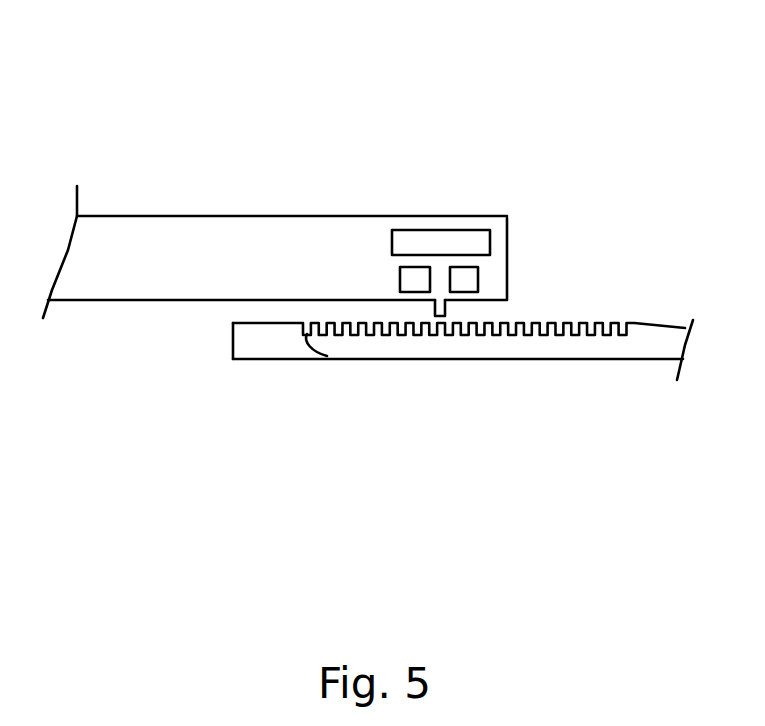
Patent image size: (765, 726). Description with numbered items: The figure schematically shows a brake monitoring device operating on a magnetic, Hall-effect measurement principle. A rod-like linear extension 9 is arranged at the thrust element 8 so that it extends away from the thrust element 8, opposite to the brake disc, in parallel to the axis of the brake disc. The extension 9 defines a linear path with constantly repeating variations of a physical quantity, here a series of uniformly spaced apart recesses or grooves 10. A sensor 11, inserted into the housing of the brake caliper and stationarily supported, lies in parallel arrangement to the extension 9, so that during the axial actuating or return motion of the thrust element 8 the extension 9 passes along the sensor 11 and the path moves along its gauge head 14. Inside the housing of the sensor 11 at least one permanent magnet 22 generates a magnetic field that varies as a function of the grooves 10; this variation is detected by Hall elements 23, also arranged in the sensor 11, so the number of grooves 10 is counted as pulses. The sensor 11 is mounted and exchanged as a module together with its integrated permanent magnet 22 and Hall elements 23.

The thrust element 8 is at (643, 350).
The linear extension 9 is at (244, 341).
The grooves 10 is at (345, 333).
The sensor 11 is at (247, 252).
The gauge head 14 is at (443, 308).
The permanent magnet 22 is at (447, 240).
The Hall elements 23 is at (408, 287).